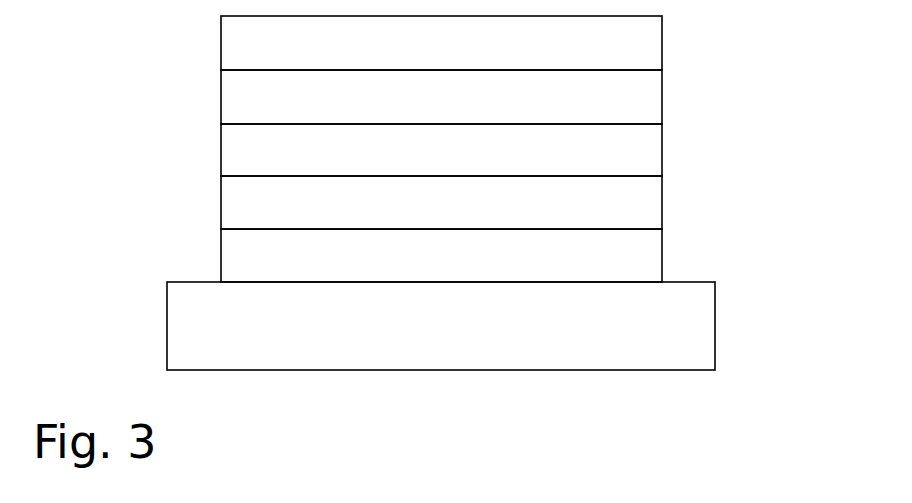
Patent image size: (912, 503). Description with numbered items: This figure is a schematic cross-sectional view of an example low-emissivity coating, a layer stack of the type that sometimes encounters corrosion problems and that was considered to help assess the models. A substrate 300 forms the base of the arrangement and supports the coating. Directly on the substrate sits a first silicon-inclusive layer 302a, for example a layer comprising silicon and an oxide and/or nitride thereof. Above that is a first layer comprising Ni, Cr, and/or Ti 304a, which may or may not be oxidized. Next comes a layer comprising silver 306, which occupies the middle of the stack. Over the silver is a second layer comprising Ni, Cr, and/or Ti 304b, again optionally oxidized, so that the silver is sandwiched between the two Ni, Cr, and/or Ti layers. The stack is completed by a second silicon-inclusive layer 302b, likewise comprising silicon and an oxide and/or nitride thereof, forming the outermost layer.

The substrate 300 is at (715, 327).
The first silicon-inclusive layer 302a is at (662, 256).
The first layer comprising Ni, Cr, and/or Ti 304a is at (662, 202).
The layer comprising silver 306 is at (662, 150).
The second layer comprising Ni, Cr, and/or Ti 304b is at (662, 97).
The second silicon-inclusive layer 302b is at (662, 44).